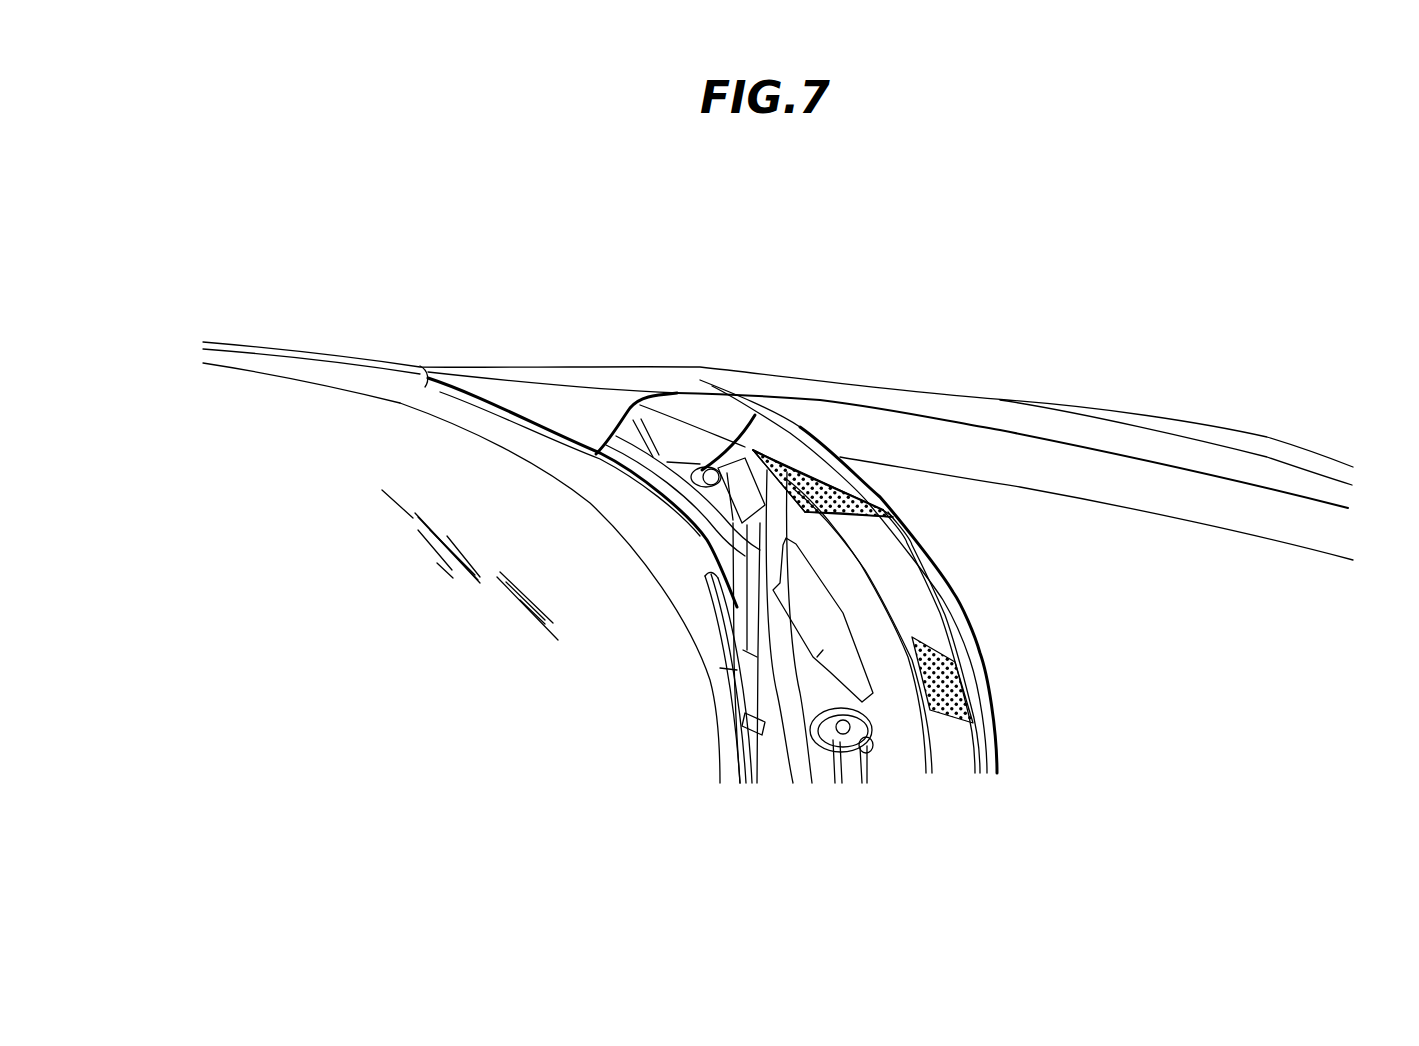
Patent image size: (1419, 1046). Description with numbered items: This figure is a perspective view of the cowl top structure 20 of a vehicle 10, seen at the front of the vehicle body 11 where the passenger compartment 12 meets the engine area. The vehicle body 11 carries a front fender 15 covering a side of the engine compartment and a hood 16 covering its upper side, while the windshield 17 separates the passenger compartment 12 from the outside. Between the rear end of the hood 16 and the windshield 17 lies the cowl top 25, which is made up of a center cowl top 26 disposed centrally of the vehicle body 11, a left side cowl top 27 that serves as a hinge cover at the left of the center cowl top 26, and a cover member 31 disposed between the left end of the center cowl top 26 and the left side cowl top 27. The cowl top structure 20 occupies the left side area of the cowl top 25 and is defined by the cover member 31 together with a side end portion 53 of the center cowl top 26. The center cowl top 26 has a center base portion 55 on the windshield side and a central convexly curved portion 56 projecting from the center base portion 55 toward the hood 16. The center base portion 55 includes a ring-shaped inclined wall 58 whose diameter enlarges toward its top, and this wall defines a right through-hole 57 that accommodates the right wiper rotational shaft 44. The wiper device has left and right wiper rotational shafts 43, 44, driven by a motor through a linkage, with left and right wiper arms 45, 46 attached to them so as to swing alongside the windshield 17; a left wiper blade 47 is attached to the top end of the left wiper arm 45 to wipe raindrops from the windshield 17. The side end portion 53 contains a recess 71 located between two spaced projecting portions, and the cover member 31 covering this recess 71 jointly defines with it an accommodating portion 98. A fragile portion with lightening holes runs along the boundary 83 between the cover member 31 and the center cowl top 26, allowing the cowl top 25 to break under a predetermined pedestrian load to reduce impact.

The vehicle 10 is at (250, 105).
The vehicle body 11 is at (1178, 388).
The passenger compartment 12 is at (258, 405).
The front fender 15 is at (938, 400).
The hood 16 is at (973, 452).
The windshield 17 is at (442, 565).
The cowl top structure 20 is at (545, 228).
The cowl top 25 is at (985, 625).
The center cowl top 26 is at (958, 610).
The left side cowl top 27 is at (575, 370).
The cover member 31 is at (712, 412).
The left wiper rotational shaft 43 is at (757, 452).
The right wiper rotational shaft 44 is at (877, 720).
The left wiper arm 45 is at (747, 553).
The right wiper arm 46 is at (857, 773).
The left wiper blade 47 is at (727, 698).
The side end portion 53 is at (890, 547).
The center base portion 55 is at (813, 768).
The central convexly curved portion 56 is at (913, 573).
The right through-hole 57 is at (870, 738).
The ring-shaped inclined wall 58 is at (852, 692).
The recess 71 is at (688, 485).
The boundary 83 is at (860, 500).
The accommodating portion 98 is at (692, 480).